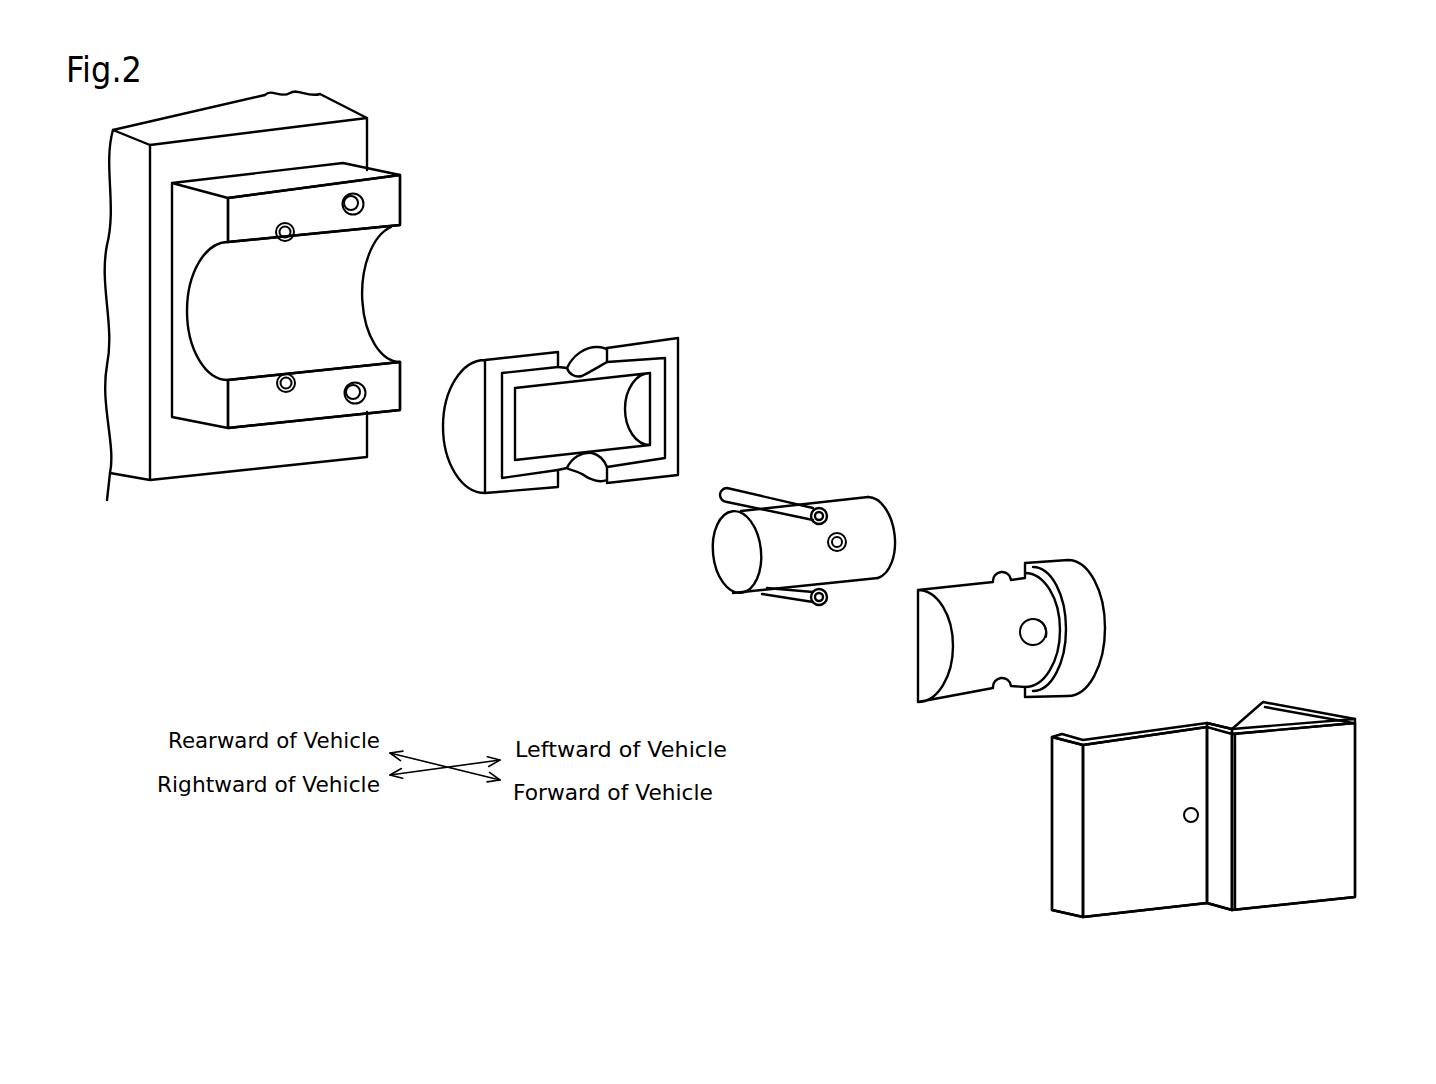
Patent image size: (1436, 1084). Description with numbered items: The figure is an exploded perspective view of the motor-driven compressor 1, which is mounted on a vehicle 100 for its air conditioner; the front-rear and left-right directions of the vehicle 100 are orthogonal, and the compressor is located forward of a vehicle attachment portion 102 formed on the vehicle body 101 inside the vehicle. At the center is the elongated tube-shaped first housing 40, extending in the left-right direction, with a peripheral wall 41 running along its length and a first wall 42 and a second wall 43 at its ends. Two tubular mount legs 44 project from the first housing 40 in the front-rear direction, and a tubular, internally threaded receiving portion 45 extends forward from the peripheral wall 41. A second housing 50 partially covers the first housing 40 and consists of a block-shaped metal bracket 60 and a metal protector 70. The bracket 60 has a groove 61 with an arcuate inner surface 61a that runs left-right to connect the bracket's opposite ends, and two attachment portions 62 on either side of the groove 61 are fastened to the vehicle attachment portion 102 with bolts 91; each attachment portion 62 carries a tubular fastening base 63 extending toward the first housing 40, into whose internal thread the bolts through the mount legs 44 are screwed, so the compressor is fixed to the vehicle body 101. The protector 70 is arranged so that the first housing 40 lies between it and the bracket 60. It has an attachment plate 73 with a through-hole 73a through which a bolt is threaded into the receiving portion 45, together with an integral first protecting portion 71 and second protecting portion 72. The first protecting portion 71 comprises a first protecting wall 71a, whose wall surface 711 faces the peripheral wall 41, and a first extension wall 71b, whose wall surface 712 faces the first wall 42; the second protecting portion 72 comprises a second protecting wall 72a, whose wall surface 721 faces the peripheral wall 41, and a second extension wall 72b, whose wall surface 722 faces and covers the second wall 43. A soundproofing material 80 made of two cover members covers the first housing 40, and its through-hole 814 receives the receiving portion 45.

The motor-driven compressor 1 is at (866, 278).
The vehicle 100 is at (1141, 183).
The vehicle body 101 is at (367, 138).
The vehicle attachment portion 102 is at (313, 106).
The first housing 40 is at (804, 572).
The peripheral wall 41 is at (771, 578).
The first wall 42 is at (715, 553).
The second wall 43 is at (897, 532).
The mount legs 44 is at (781, 500).
The receiving portion 45 is at (834, 531).
The second housing 50 is at (803, 503).
The bracket 60 is at (446, 215).
The groove 61 is at (350, 353).
The inner surface 61a is at (344, 290).
The attachment portions 62 is at (298, 203).
The fastening base 63 is at (275, 236).
The bolts 91 is at (365, 207).
The protector 70 is at (1283, 698).
The first protecting portion 71 is at (1130, 863).
The first protecting wall 71a is at (1095, 883).
The first extension wall 71b is at (1065, 837).
The wall surface 711 is at (1147, 737).
The wall surface 712 is at (1080, 733).
The second protecting portion 72 is at (1290, 857).
The second protecting wall 72a is at (1332, 842).
The second extension wall 72b is at (1345, 720).
The wall surface 721 is at (1270, 735).
The wall surface 722 is at (1288, 699).
The attachment plate 73 is at (1193, 703).
The through-hole 73a is at (1191, 817).
The soundproofing material 80 is at (648, 338).
The through-hole 814 is at (1042, 630).